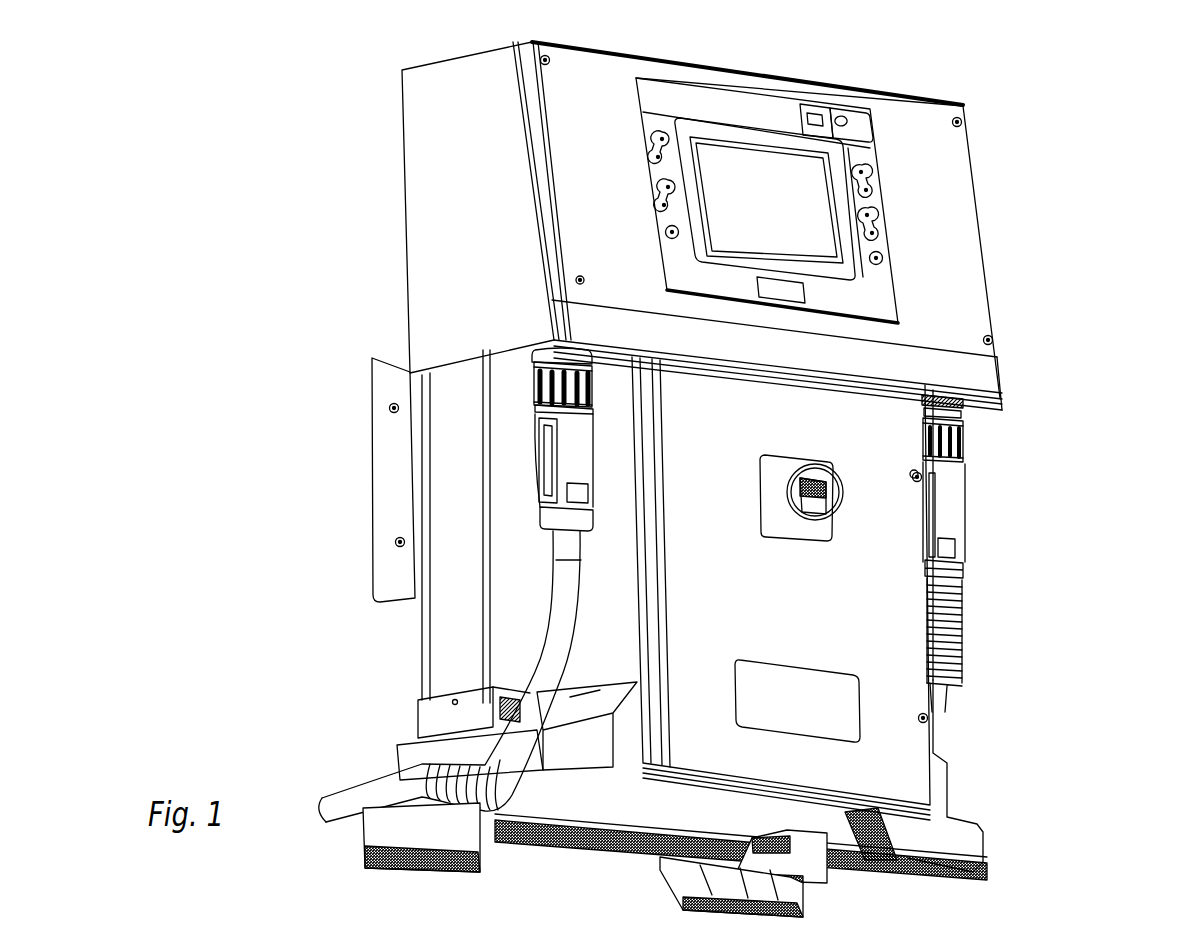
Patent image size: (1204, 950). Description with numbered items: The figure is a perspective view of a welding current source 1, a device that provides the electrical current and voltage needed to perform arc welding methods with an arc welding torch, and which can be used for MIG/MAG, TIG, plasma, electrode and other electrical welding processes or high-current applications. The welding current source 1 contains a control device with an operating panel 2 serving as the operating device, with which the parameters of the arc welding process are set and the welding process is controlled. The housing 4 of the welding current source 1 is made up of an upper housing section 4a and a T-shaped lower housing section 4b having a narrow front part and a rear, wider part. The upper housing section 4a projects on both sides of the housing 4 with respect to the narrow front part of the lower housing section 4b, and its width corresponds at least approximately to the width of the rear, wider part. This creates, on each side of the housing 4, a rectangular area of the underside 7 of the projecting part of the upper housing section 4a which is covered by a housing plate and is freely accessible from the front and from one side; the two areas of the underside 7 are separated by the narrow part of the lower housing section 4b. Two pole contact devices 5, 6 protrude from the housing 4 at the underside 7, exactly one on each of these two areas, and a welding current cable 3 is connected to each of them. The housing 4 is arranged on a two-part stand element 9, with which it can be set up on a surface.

The welding current source 1 is at (292, 333).
The operating panel 2 is at (862, 292).
The welding current cable 3 is at (565, 545).
The housing 4 is at (1057, 424).
The upper section of the housing 4a is at (945, 208).
The lower housing section 4b is at (893, 580).
The pole contact device 5 is at (945, 394).
The pole contact device 6 is at (558, 338).
The underside of the projecting part of the upper housing section 7 is at (607, 362).
The two-part stand element 9 is at (963, 802).